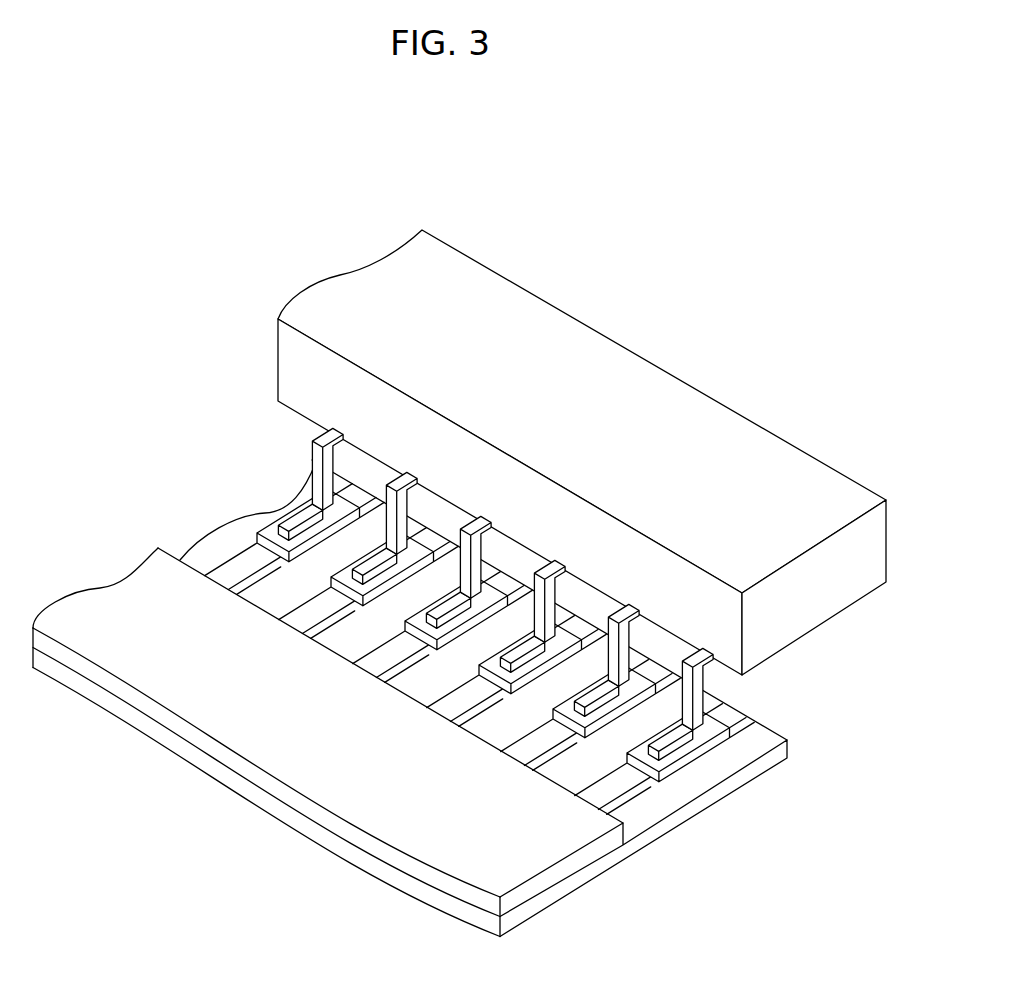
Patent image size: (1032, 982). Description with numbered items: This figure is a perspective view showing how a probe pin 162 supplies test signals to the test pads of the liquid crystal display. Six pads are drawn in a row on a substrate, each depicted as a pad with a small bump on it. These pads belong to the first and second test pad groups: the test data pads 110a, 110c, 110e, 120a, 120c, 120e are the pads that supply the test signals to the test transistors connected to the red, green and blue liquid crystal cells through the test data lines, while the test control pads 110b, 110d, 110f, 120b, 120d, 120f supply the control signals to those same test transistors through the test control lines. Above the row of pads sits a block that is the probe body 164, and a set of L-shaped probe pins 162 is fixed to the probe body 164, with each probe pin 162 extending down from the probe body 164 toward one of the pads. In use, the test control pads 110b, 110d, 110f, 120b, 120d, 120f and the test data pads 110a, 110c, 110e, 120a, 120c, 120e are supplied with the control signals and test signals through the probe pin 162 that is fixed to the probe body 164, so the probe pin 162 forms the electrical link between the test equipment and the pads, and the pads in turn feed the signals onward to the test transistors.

The test data pad 110a is at (293, 566).
The test control pad 110b is at (367, 610).
The test data pad 110c is at (441, 654).
The test control pad 110d is at (515, 698).
The test data pad 110e is at (589, 742).
The test control pad 110f is at (712, 766).
The test data pad 120a is at (262, 592).
The test control pad 120b is at (336, 636).
The test data pad 120c is at (410, 680).
The test control pad 120d is at (484, 724).
The test data pad 120e is at (558, 768).
The test control pad 120f is at (781, 776).
The probe pin 162 is at (282, 469).
The probe body 164 is at (818, 613).